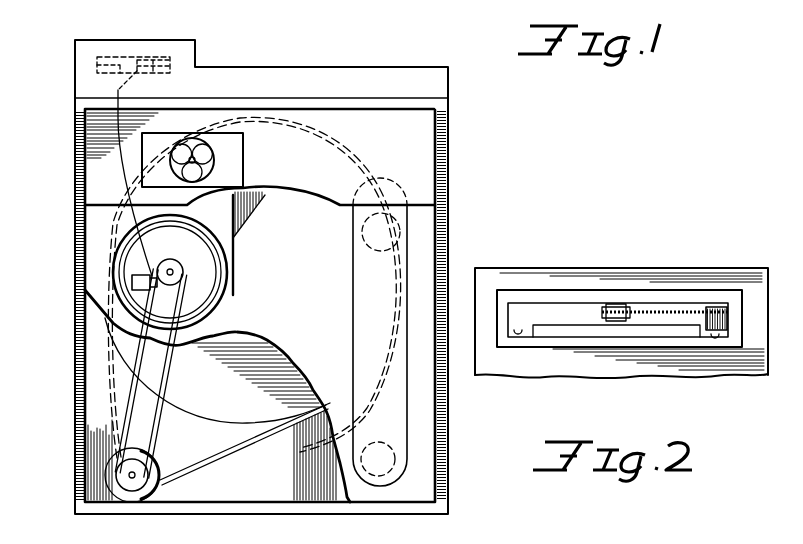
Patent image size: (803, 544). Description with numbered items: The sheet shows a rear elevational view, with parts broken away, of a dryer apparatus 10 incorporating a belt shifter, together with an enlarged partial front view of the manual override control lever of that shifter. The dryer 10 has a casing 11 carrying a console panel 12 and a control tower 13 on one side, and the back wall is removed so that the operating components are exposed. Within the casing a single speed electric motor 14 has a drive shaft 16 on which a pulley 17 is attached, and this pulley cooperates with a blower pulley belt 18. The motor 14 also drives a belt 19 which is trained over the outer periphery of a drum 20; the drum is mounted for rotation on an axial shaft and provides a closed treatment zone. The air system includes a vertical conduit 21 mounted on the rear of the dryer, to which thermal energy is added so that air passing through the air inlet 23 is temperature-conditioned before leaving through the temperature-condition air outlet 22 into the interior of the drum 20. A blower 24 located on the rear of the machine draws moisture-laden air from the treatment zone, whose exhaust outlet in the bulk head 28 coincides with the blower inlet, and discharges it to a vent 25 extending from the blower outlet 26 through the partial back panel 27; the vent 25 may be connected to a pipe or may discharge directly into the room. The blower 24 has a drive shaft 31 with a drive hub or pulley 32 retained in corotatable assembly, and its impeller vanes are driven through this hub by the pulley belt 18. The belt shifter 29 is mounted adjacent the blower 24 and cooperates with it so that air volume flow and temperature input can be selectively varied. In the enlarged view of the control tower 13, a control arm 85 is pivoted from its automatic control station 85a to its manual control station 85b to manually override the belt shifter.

In FIG. 1, the dryer apparatus 10 is at (461, 156).
In FIG. 1, the casing 11 is at (77, 236).
In FIG. 1, the console panel 12 is at (346, 74).
In FIG. 1, the control tower 13 is at (188, 48).
In FIG. 2, the control tower 13 is at (527, 273).
In FIG. 1, the single speed electric motor 14 is at (152, 490).
In FIG. 1, the drive shaft 16 is at (134, 471).
In FIG. 1, the pulley 17 is at (146, 470).
In FIG. 1, the blower pulley belt 18 is at (167, 410).
In FIG. 1, the belt 19 is at (223, 460).
In FIG. 1, the drum 20 is at (262, 416).
In FIG. 1, the vertical conduit 21 is at (357, 340).
In FIG. 1, the temperature-condition air outlet 22 is at (370, 246).
In FIG. 1, the air inlet 23 is at (379, 441).
In FIG. 1, the blower 24 is at (223, 294).
In FIG. 1, the vent 25 is at (208, 156).
In FIG. 1, the blower outlet 26 is at (220, 226).
In FIG. 1, the partial back panel 27 is at (410, 148).
In FIG. 1, the bulk head 28 is at (425, 233).
In FIG. 1, the belt shifter 29 is at (132, 281).
In FIG. 1, the drive shaft 31 is at (171, 268).
In FIG. 1, the drive hub or pulley 32 is at (178, 272).
In FIG. 2, the control arm 85 is at (711, 312).
In FIG. 2, the automatic control station 85a is at (715, 336).
In FIG. 2, the manual control station 85b is at (518, 331).